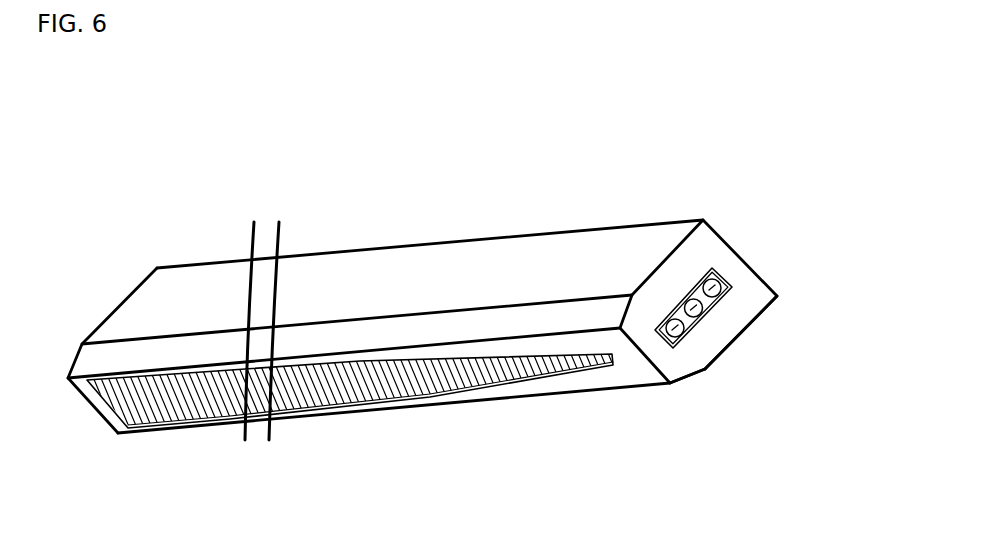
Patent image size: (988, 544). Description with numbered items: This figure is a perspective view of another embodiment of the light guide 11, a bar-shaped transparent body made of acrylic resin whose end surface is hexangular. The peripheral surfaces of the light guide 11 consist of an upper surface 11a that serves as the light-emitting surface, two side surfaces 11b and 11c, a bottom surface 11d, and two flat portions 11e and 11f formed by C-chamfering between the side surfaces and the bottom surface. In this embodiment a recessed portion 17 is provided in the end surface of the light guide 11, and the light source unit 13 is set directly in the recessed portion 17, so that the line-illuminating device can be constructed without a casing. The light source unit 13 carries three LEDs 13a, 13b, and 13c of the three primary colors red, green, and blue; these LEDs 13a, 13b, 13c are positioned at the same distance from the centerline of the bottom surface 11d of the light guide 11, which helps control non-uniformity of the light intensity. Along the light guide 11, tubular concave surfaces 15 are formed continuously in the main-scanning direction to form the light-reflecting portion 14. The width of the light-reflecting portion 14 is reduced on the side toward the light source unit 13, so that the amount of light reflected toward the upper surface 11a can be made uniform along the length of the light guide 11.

The light guide 11 is at (326, 241).
The upper surface 11a is at (732, 242).
The side surface 11b is at (487, 250).
The side surface 11c is at (725, 348).
The bottom surface 11d is at (590, 387).
The flat portion 11e is at (568, 318).
The flat portion 11f is at (687, 380).
The light source unit 13 is at (740, 277).
The LED 13a is at (715, 270).
The LED 13b is at (690, 290).
The LED 13c is at (661, 320).
The light-reflecting portion 14 is at (410, 388).
The tubular concave surfaces 15 is at (308, 400).
The recessed portion 17 is at (723, 288).